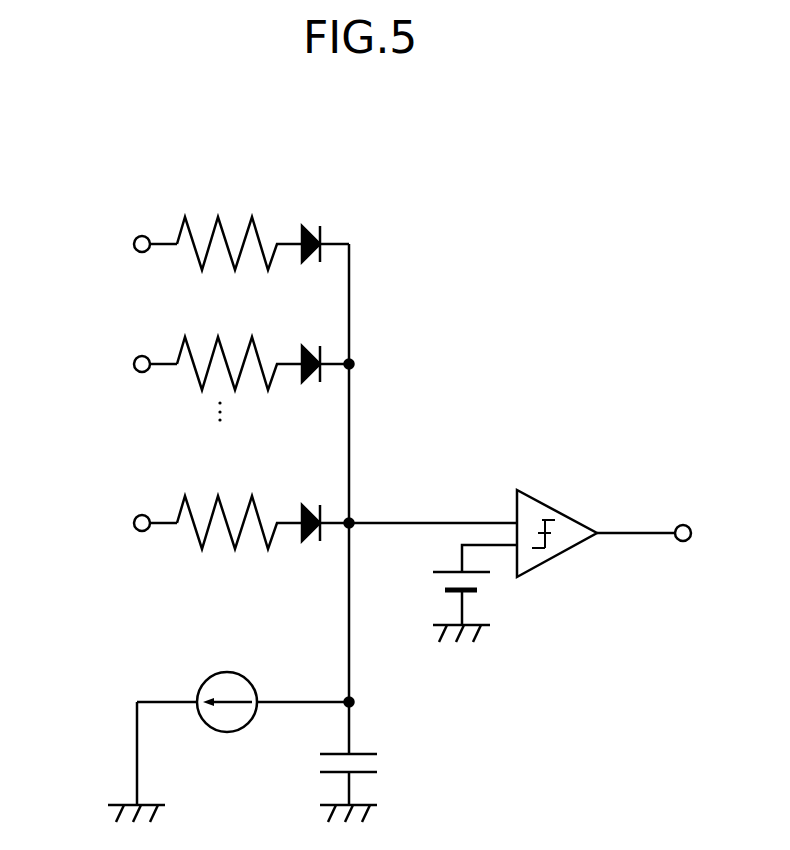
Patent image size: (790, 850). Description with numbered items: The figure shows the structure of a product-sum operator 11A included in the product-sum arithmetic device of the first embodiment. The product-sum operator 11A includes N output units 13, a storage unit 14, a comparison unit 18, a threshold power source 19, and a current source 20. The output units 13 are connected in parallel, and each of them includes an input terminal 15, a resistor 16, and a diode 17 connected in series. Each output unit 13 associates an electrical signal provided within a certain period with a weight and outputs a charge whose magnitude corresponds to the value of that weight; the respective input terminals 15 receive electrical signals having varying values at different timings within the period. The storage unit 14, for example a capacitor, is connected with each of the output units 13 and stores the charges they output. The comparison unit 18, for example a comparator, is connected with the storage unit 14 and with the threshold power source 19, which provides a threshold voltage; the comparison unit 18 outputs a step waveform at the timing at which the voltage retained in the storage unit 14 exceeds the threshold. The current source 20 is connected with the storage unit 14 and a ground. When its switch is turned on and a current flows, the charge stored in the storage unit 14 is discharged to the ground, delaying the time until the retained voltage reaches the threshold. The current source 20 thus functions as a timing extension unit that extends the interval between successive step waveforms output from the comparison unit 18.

The product-sum operator 11A is at (402, 147).
The output unit 13 is at (113, 247).
The storage unit 14 is at (370, 780).
The input terminal 15 is at (143, 236).
The resistor 16 is at (218, 217).
The diode 17 is at (313, 226).
The comparison unit 18 is at (563, 565).
The threshold power source 19 is at (467, 598).
The current source 20 is at (227, 672).